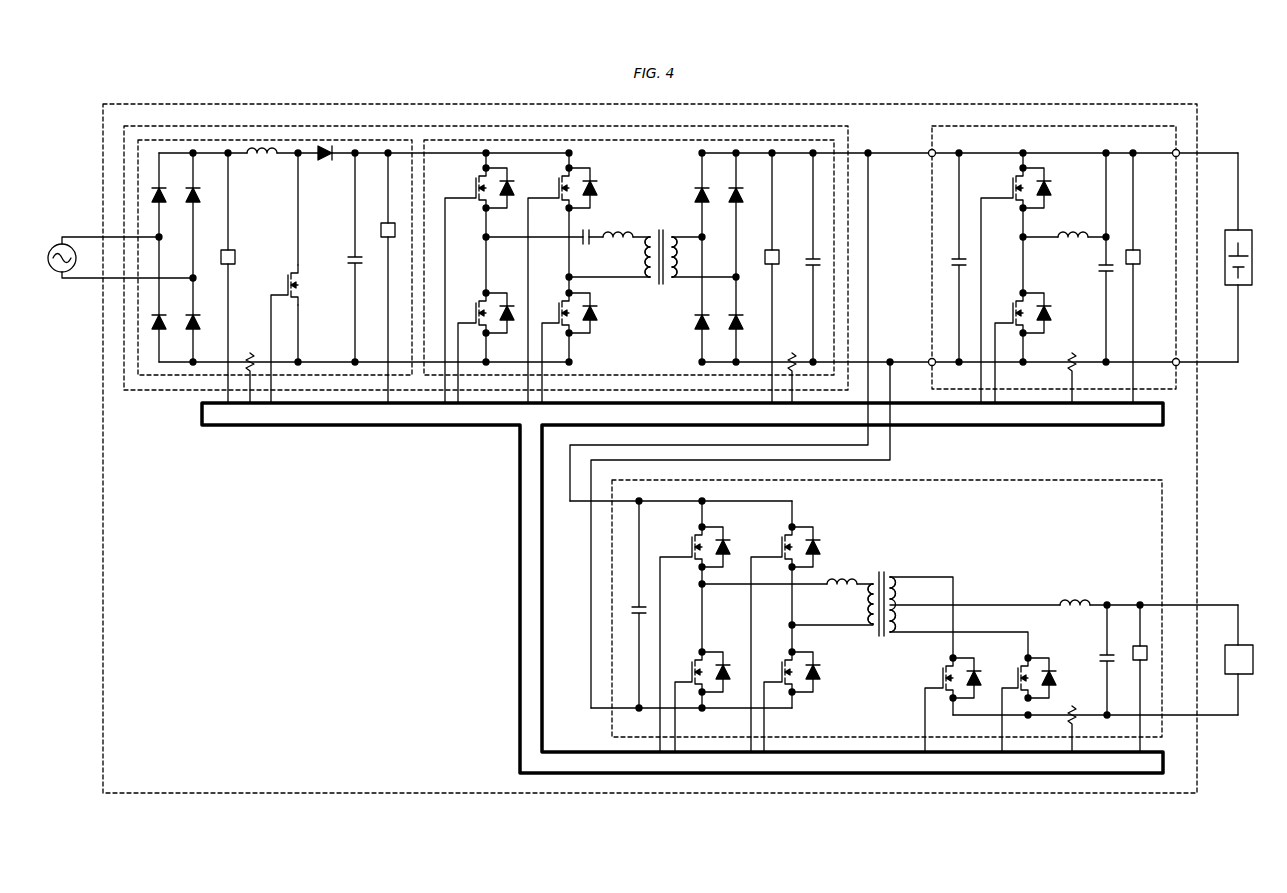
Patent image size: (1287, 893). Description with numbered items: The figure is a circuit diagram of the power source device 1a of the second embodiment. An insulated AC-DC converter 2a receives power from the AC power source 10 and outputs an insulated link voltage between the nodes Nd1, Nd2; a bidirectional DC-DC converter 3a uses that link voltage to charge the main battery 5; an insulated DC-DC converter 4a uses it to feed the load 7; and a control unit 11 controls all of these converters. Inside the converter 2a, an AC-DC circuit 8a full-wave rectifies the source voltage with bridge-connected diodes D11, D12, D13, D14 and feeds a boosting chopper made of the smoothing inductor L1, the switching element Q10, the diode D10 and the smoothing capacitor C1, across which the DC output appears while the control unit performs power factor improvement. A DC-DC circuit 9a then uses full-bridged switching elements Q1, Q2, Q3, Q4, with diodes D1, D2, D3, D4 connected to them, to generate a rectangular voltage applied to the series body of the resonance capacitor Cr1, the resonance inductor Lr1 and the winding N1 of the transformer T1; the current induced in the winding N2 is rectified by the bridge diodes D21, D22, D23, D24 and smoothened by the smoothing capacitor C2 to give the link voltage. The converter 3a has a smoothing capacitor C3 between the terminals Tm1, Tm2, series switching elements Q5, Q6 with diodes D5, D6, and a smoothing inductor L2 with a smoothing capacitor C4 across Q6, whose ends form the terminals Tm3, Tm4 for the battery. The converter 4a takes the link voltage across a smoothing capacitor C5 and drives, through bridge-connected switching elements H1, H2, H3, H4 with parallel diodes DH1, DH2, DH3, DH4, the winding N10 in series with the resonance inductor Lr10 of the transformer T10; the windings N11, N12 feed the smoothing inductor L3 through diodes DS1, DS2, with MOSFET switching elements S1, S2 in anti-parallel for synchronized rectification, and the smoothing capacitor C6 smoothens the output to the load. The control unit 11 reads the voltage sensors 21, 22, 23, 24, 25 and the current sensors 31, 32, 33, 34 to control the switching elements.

The power source device 1a is at (104, 578).
The insulated AC-DC converter 2a is at (150, 391).
The bidirectional DC-DC converter 3a is at (1066, 127).
The insulated DC-DC converter 4a is at (1002, 481).
The main battery 5 is at (1226, 229).
The load 7 is at (1225, 644).
The AC-DC circuit 8a is at (181, 376).
The DC-DC circuit 9a is at (669, 375).
The AC power source 10 is at (62, 244).
The control unit 11 is at (326, 427).
The voltage sensor 21 is at (234, 250).
The voltage sensor 22 is at (384, 223).
The voltage sensor 23 is at (778, 250).
The voltage sensor 24 is at (1139, 250).
The voltage sensor 25 is at (1137, 646).
The current sensor 31 is at (250, 354).
The current sensor 32 is at (792, 354).
The current sensor 33 is at (1072, 354).
The current sensor 34 is at (1073, 705).
The diode D11 is at (165, 196).
The diode D12 is at (165, 323).
The diode D13 is at (199, 196).
The diode D14 is at (199, 323).
The smoothing inductor L1 is at (263, 160).
The diode D10 is at (326, 160).
The switching element Q10 is at (286, 279).
The smoothing capacitor C1 is at (363, 265).
The switching element Q1 is at (473, 188).
The switching element Q2 is at (473, 313).
The switching element Q3 is at (556, 188).
The switching element Q4 is at (556, 313).
The diode D1 is at (506, 200).
The diode D2 is at (506, 325).
The diode D3 is at (598, 188).
The diode D4 is at (598, 313).
The resonance capacitor Cr1 is at (586, 245).
The resonance inductor Lr1 is at (614, 232).
The transformer T1 is at (661, 231).
The winding N1 is at (645, 259).
The winding N2 is at (673, 283).
The diode D21 is at (708, 196).
The diode D22 is at (708, 323).
The diode D23 is at (742, 196).
The diode D24 is at (742, 323).
The smoothing capacitor C2 is at (806, 262).
The node Nd1 is at (869, 157).
The node Nd2 is at (892, 366).
The terminal Tm1 is at (930, 151).
The terminal Tm2 is at (930, 361).
The terminal Tm3 is at (1174, 157).
The terminal Tm4 is at (1173, 360).
The smoothing capacitor C3 is at (952, 262).
The smoothing capacitor C4 is at (1100, 269).
The switching element Q5 is at (1010, 188).
The switching element Q6 is at (1010, 313).
The diode D5 is at (1043, 200).
The diode D6 is at (1043, 325).
The smoothing inductor L2 is at (1070, 232).
The smoothing capacitor C5 is at (633, 608).
The switching element H1 is at (689, 540).
The switching element H2 is at (689, 665).
The switching element H3 is at (779, 540).
The switching element H4 is at (779, 665).
The diode DH1 is at (721, 538).
The diode DH2 is at (721, 663).
The diode DH3 is at (811, 538).
The diode DH4 is at (811, 663).
The resonance inductor Lr10 is at (843, 573).
The transformer T10 is at (882, 580).
The winding N10 is at (866, 600).
The winding N11 is at (899, 619).
The winding N12 is at (899, 592).
The switching element S1 is at (1016, 668).
The switching element S2 is at (941, 668).
The diode DS1 is at (1047, 668).
The diode DS2 is at (972, 668).
The smoothing inductor L3 is at (1076, 599).
The smoothing capacitor C6 is at (1100, 656).